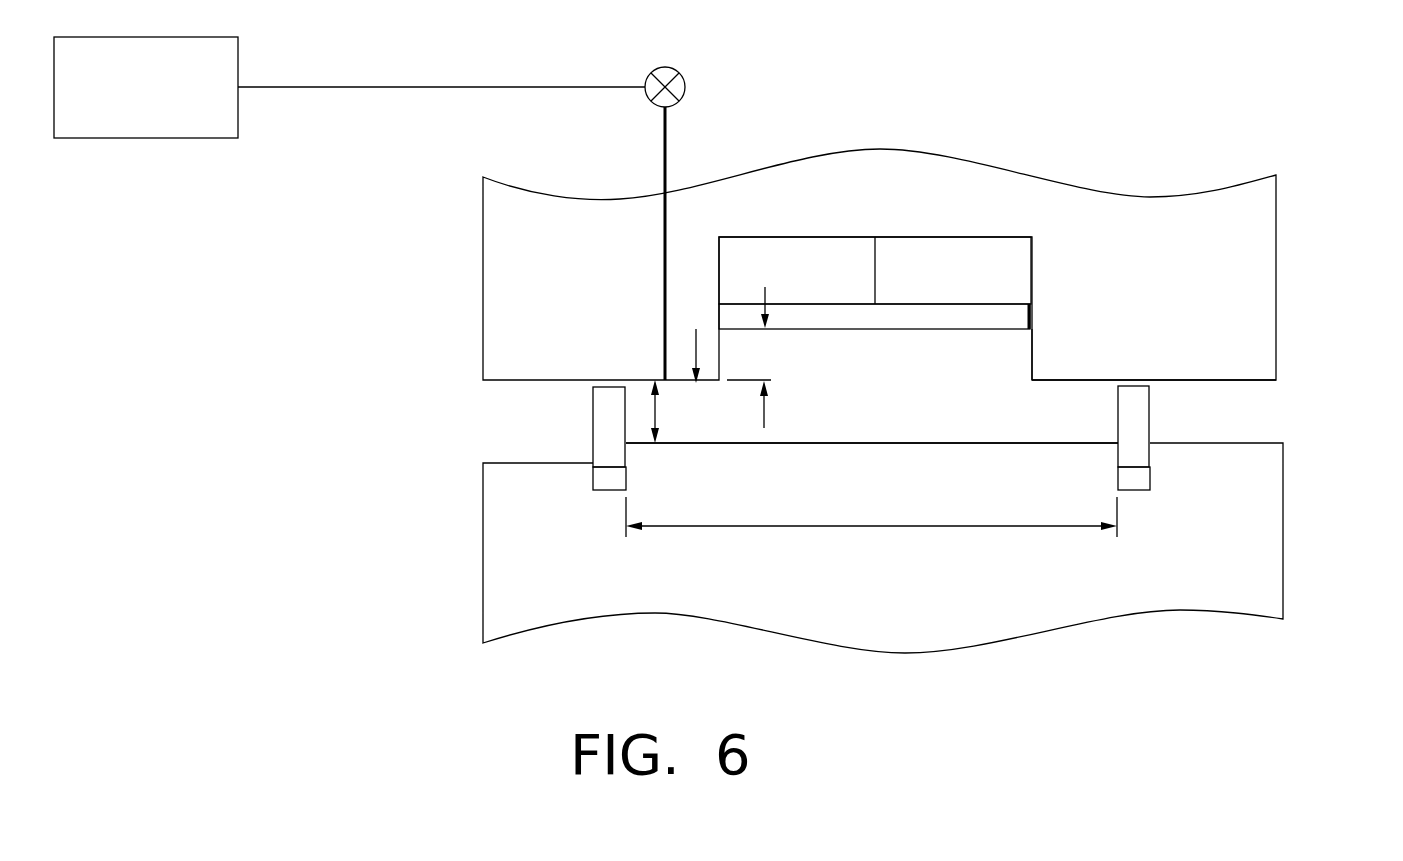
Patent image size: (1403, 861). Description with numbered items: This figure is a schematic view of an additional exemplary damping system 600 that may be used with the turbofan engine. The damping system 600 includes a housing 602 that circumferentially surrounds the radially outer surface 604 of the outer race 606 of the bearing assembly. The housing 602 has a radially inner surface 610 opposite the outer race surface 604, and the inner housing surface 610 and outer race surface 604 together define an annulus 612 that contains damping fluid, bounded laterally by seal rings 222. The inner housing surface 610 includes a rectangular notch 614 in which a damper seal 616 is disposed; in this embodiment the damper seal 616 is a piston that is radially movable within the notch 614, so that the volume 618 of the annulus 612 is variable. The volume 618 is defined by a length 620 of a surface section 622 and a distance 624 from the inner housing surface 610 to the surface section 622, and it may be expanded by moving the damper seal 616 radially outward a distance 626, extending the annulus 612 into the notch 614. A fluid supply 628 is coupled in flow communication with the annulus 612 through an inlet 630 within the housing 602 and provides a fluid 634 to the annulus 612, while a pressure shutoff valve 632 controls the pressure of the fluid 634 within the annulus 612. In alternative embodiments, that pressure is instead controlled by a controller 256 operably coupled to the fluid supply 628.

The seal rings 222 is at (593, 418).
The controller 256 is at (174, 97).
The damping system 600 is at (1153, 84).
The housing 602 is at (1277, 250).
The radially outer surface 604 is at (1267, 443).
The outer race 606 is at (1284, 530).
The radially inner surface 610 is at (1229, 381).
The annulus 612 is at (1059, 392).
The rectangular notch 614 is at (1032, 283).
The damper seal 616 is at (876, 276).
The volume 618 is at (1015, 417).
The length 620 is at (942, 527).
The surface section 622 is at (818, 441).
The distance 624 is at (655, 412).
The distance 626 is at (768, 414).
The fluid supply 628 is at (680, 58).
The inlet 630 is at (667, 163).
The pressure shutoff valve 632 is at (686, 87).
The fluid 634 is at (696, 342).